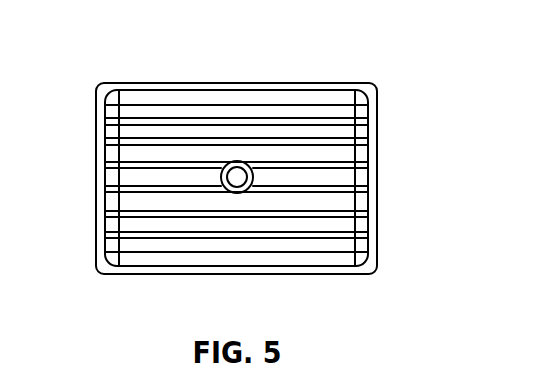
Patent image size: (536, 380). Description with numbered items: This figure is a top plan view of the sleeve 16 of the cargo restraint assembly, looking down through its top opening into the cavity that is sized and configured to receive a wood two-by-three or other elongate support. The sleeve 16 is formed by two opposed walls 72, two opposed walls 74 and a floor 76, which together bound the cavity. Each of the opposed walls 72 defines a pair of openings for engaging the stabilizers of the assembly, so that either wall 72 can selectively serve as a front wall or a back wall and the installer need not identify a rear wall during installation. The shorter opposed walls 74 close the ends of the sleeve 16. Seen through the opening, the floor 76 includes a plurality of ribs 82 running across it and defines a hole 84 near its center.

The sleeve 16 is at (378, 122).
The opposed walls 72 is at (150, 82).
The opposed walls 74 is at (95, 178).
The floor 76 is at (323, 118).
The ribs 82 is at (190, 162).
The hole 84 is at (239, 161).